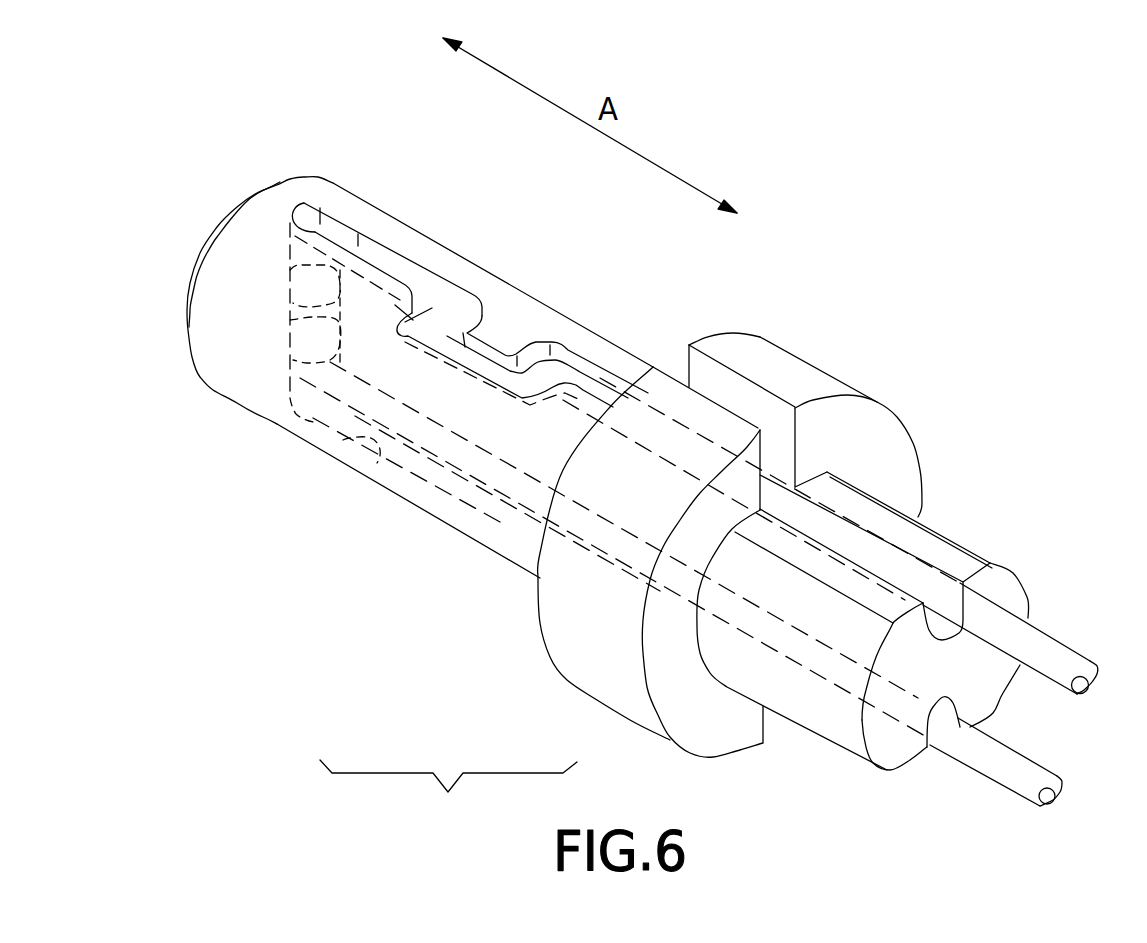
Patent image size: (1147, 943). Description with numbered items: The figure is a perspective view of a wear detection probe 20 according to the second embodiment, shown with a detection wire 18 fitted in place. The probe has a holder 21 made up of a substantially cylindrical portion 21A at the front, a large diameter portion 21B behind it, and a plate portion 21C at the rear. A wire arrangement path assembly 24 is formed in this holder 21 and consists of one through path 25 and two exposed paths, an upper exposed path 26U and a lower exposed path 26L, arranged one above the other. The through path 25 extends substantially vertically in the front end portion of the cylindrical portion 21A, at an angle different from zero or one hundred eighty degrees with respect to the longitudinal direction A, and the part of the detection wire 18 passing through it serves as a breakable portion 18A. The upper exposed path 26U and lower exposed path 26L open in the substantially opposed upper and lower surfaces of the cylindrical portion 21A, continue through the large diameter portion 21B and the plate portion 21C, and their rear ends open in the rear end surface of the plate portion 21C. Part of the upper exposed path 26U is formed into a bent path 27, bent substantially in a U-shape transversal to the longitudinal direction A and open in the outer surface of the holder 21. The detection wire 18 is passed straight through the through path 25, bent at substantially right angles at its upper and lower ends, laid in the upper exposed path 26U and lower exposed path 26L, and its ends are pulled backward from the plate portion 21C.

The detection wire 18 is at (1068, 667).
The breakable portion 18A is at (361, 247).
The wear detection probe 20 is at (888, 358).
The holder 21 is at (448, 795).
The cylindrical portion 21A is at (413, 497).
The large diameter portion 21B is at (567, 612).
The plate portion 21C is at (725, 645).
The wire arrangement path assembly 24 is at (628, 297).
The through path 25 is at (280, 383).
The upper exposed path 26U is at (433, 296).
The lower exposed path 26L is at (348, 455).
The bent path 27 is at (492, 347).